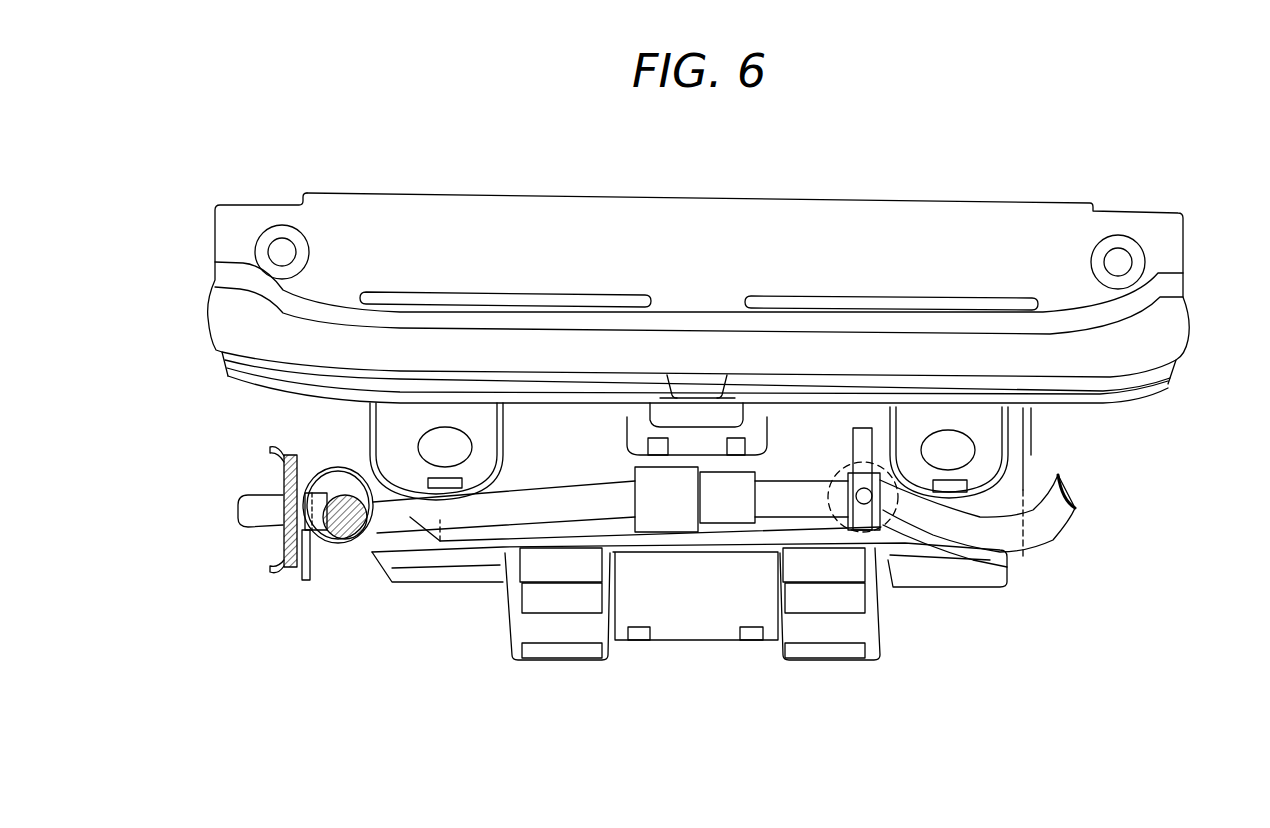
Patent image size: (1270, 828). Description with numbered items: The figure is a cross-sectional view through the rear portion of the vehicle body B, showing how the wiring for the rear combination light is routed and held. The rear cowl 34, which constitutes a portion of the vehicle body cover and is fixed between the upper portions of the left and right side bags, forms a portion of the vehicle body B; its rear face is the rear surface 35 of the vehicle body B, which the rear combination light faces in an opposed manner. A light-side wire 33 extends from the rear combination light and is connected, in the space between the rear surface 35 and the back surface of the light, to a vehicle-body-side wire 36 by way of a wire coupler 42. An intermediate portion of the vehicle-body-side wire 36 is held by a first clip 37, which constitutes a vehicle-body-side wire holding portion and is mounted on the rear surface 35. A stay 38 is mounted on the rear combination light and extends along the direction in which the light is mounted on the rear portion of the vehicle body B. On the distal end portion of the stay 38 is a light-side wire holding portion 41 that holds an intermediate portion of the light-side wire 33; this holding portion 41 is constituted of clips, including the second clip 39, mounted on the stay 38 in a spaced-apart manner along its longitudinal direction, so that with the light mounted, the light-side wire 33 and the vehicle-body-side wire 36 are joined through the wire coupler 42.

The vehicle body B is at (1024, 197).
The light-side wire 33 is at (475, 520).
The rear cowl 34 is at (1173, 248).
The rear surface 35 is at (577, 430).
The vehicle-body-side wire 36 is at (1043, 528).
The first clip 37 is at (880, 532).
The stay 38 is at (278, 492).
The second clip 39 is at (326, 542).
The light-side wire holding portion 41 is at (335, 463).
The wire coupler 42 is at (655, 508).